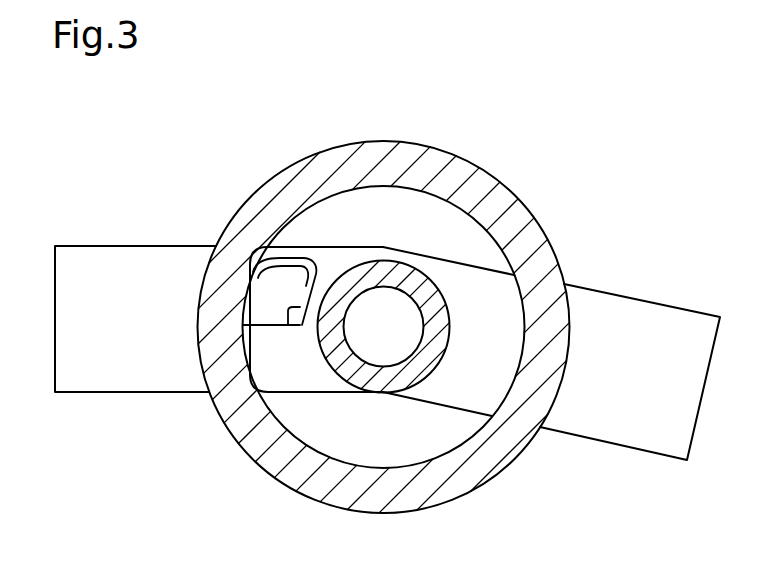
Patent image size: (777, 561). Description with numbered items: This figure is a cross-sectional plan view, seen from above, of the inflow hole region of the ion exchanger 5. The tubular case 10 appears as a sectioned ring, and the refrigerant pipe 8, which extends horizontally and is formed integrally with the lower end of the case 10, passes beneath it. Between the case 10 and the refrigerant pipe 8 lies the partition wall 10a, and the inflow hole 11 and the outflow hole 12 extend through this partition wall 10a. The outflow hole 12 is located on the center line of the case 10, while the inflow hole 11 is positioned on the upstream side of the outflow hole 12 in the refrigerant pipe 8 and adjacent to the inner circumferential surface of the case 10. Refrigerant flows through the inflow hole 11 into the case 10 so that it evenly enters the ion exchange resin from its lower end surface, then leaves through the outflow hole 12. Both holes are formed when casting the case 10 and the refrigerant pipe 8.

The ion exchanger 5 is at (564, 132).
The refrigerant pipe 8 is at (137, 245).
The case 10 is at (281, 172).
The partition wall 10a is at (303, 390).
The inflow hole 11 is at (289, 326).
The outflow hole 12 is at (418, 337).